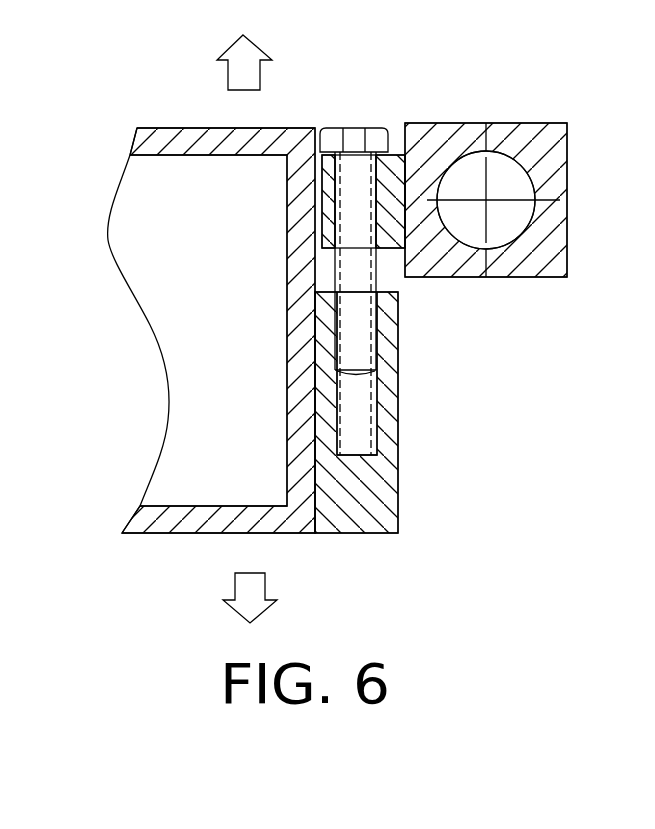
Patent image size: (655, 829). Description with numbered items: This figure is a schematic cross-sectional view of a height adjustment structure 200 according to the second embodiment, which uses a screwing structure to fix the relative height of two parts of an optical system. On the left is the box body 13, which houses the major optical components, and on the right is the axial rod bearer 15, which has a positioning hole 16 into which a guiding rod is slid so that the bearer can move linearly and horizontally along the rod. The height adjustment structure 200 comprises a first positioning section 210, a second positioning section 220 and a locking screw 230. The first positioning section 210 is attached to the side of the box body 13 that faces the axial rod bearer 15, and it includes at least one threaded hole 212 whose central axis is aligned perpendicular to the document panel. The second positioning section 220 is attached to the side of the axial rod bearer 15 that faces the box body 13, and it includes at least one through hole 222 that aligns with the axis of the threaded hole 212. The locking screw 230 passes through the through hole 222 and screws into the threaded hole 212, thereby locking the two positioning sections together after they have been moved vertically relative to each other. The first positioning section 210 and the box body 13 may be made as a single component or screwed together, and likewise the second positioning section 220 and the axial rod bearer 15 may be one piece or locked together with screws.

The box body 13 is at (172, 130).
The axial rod bearer 15 is at (436, 140).
The positioning hole 16 is at (507, 178).
The height adjustment structure 200 is at (347, 330).
The first positioning section 210 is at (309, 412).
The threaded hole 212 is at (350, 405).
The second positioning section 220 is at (309, 281).
The through hole 222 is at (345, 197).
The locking screw 230 is at (363, 353).